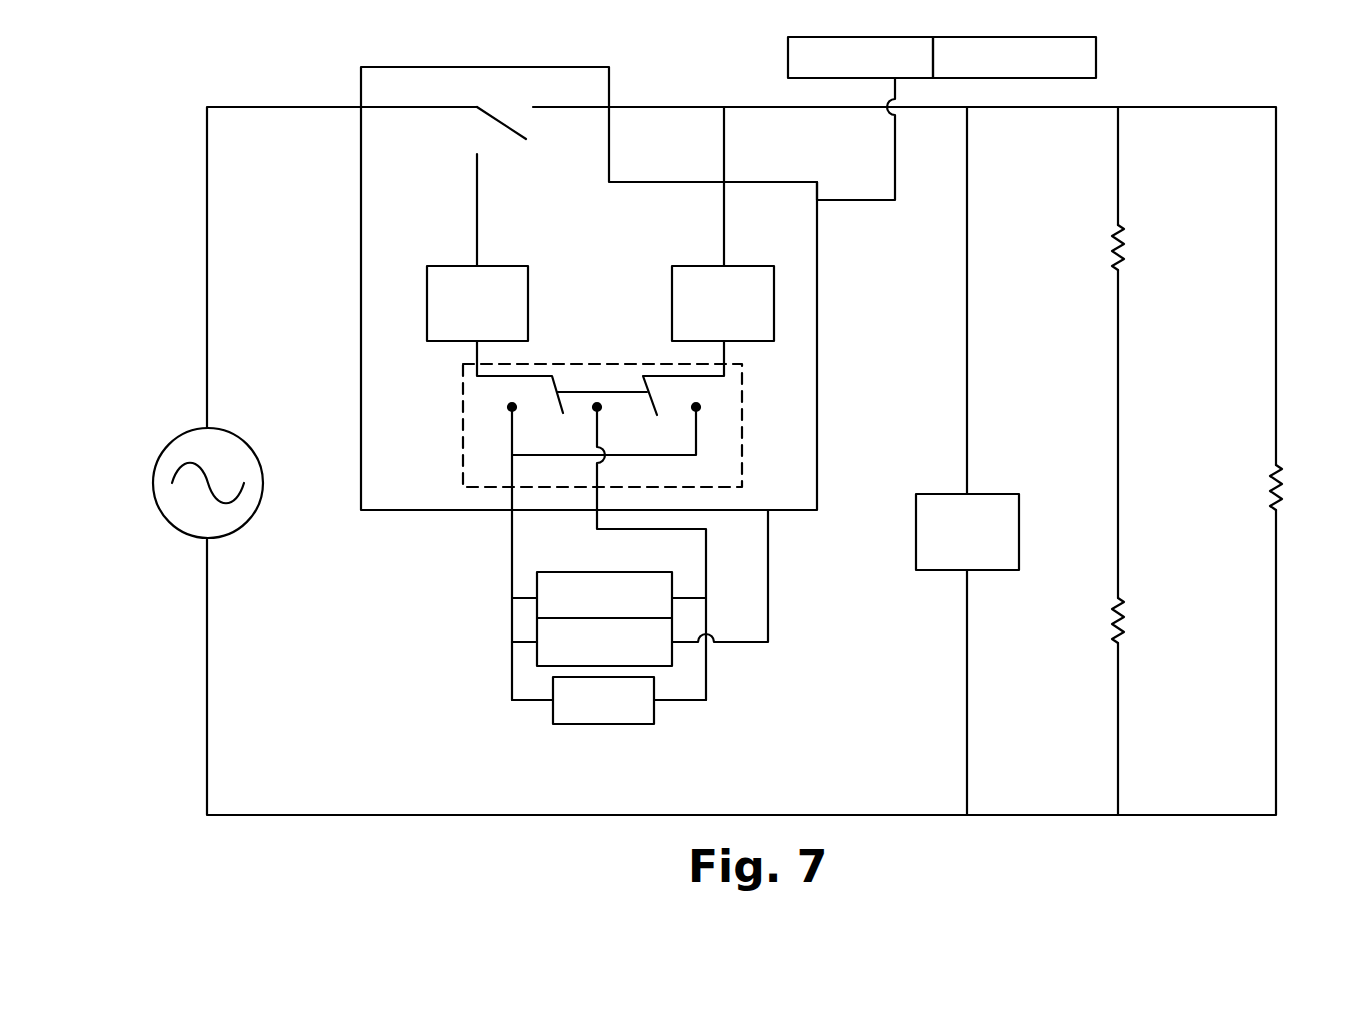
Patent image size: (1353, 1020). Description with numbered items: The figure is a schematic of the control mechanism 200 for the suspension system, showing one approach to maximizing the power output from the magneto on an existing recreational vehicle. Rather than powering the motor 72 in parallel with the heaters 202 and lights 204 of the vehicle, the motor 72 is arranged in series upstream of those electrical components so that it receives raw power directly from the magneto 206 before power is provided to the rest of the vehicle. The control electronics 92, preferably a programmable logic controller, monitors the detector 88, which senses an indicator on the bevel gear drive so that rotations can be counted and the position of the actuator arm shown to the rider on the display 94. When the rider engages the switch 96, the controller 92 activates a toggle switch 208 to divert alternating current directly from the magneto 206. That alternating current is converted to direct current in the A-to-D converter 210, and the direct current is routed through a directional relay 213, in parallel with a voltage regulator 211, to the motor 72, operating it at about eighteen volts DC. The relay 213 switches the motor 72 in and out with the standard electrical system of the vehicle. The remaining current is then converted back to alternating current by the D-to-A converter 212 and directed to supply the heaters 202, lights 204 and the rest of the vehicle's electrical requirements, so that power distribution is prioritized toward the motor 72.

The control mechanism 200 is at (238, 92).
The magneto 206 is at (236, 531).
The control electronics 92 is at (361, 234).
The toggle switch 208 is at (471, 131).
The display 94 is at (788, 50).
The switch 96 is at (1096, 59).
The A-to-D converter 210 is at (427, 287).
The D-to-A converter 212 is at (672, 290).
The directional relay 213 is at (463, 425).
The motor 72 is at (537, 598).
The detector 88 is at (537, 642).
The voltage regulator 211 is at (577, 724).
The heaters 202 is at (1127, 246).
The lights 204 is at (1284, 486).